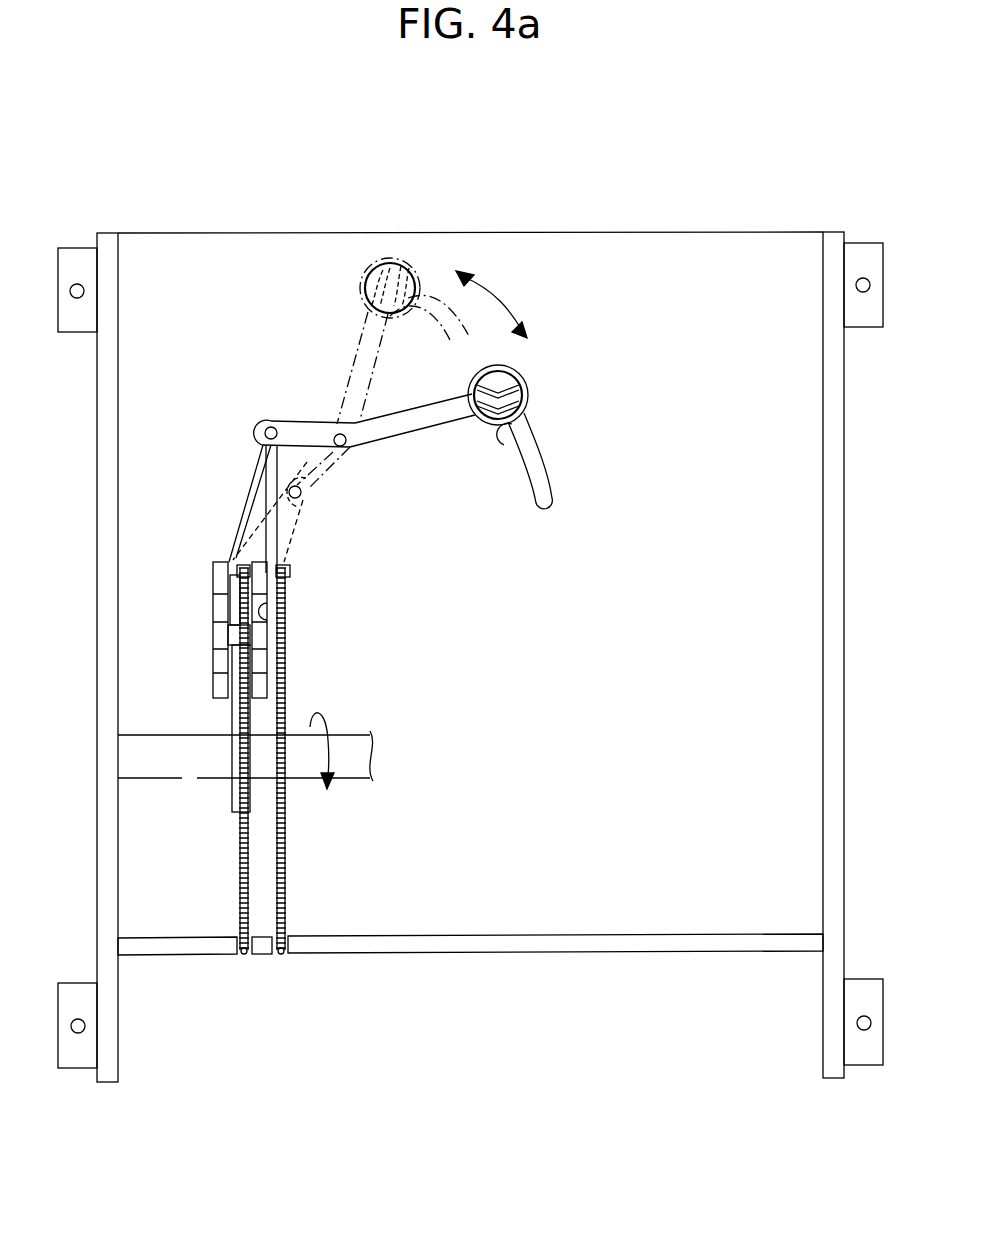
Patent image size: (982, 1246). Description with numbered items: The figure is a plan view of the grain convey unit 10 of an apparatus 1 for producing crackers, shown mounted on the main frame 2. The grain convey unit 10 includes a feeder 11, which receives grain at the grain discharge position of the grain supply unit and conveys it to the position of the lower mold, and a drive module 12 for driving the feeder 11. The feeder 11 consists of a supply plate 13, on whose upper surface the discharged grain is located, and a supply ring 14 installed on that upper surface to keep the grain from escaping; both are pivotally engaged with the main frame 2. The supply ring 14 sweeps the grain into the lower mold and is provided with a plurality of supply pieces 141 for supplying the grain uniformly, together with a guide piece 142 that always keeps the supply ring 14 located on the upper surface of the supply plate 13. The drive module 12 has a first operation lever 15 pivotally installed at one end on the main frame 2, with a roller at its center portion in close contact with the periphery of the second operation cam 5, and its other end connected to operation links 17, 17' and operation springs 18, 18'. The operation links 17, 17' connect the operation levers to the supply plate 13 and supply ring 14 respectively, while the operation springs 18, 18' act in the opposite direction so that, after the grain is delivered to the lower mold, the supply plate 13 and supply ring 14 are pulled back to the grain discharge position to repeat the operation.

The apparatus 1 is at (470, 586).
The main frame 2 is at (790, 190).
The second operation cam 5 is at (238, 717).
The grain convey unit 10 is at (180, 616).
The feeder 11 is at (562, 336).
The drive module 12 is at (417, 545).
The supply plate 13 is at (530, 404).
The supply ring 14 is at (512, 443).
The supply pieces 141 is at (530, 388).
The guide piece 142 is at (548, 508).
The first operation lever 15 is at (267, 612).
The operation link 17 is at (324, 571).
The operation link 17' is at (311, 571).
The operation spring 18 is at (322, 761).
The operation spring 18' is at (343, 761).